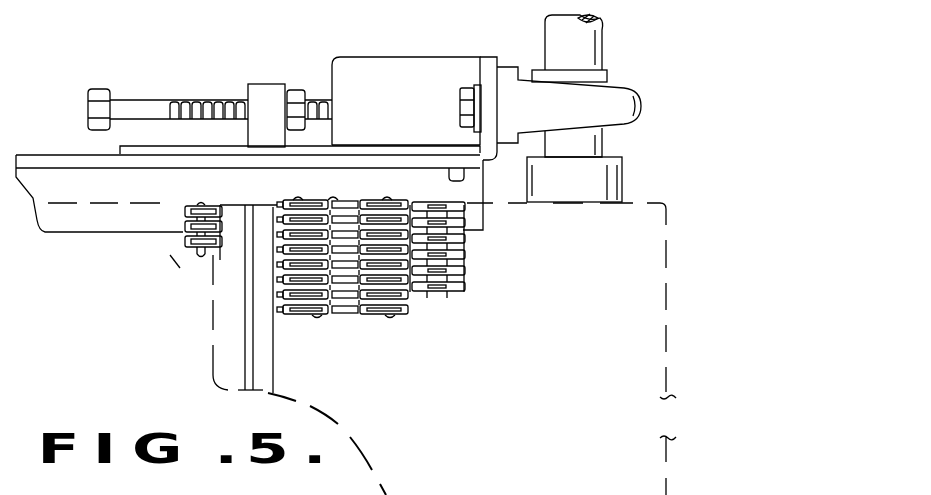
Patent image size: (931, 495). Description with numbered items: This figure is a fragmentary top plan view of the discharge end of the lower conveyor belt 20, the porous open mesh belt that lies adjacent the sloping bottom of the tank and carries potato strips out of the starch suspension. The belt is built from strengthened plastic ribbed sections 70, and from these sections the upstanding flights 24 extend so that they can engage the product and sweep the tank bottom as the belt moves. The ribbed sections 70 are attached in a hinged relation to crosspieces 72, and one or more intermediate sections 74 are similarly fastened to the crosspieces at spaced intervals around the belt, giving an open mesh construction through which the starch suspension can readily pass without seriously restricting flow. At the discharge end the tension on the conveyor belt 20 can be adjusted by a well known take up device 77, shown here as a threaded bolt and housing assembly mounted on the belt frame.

The lower conveyor belt 20 is at (584, 332).
The flights 24 is at (247, 322).
The ribbed sections 70 is at (280, 379).
The crosspieces 72 is at (293, 313).
The intermediate sections 74 is at (357, 317).
The take up device 77 is at (404, 60).